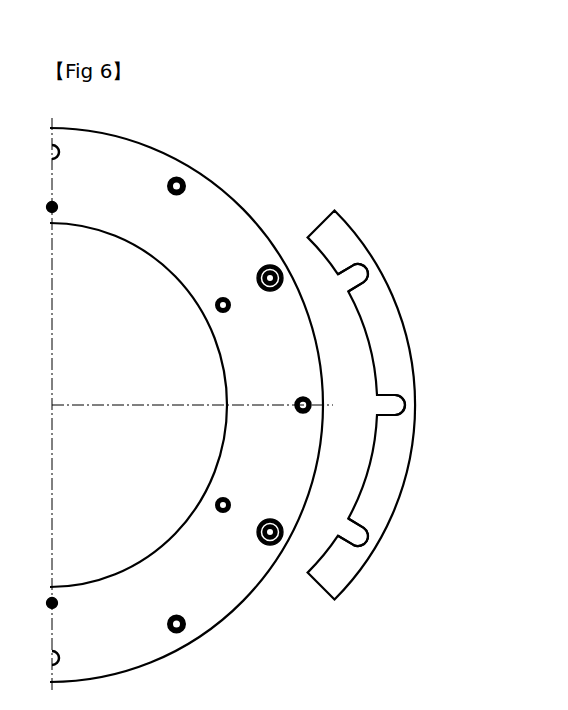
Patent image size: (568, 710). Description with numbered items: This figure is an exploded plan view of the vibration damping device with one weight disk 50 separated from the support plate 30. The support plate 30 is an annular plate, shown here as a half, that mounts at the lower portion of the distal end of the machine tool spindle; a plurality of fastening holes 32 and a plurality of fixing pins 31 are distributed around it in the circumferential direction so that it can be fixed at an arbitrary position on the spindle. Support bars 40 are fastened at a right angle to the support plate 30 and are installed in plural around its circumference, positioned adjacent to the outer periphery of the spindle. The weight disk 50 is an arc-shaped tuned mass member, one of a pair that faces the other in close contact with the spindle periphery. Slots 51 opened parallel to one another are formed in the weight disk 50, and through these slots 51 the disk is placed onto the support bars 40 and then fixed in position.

The support plate 30 is at (220, 596).
The fixing pin 31 is at (216, 310).
The fastening hole 32 is at (185, 183).
The support bar 40 is at (276, 266).
The weight disk 50 is at (408, 327).
The slot 51 is at (378, 268).